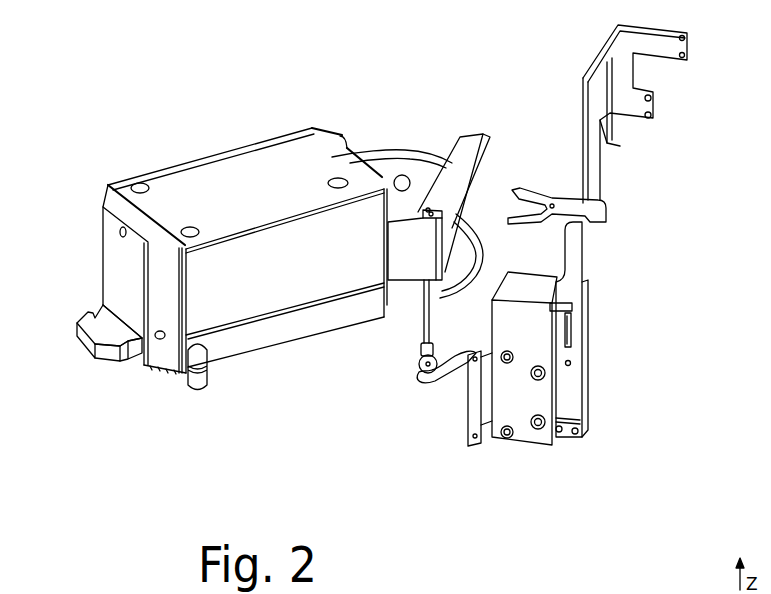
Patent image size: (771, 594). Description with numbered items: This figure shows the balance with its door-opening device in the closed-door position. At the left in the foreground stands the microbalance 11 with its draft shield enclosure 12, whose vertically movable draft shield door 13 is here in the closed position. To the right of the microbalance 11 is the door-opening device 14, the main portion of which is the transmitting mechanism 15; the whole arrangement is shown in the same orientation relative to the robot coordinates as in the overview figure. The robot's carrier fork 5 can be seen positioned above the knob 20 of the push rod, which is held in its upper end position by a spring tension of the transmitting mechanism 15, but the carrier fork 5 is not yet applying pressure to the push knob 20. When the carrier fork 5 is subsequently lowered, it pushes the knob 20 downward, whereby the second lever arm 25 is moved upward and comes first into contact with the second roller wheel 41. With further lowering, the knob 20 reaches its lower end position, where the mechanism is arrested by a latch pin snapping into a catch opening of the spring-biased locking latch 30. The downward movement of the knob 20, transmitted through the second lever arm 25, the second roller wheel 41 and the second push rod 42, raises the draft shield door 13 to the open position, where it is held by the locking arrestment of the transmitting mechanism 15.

The carrier fork 5 is at (565, 205).
The microbalance 11 is at (235, 170).
The draft shield enclosure 12 is at (418, 153).
The draft shield door 13 is at (482, 147).
The door-opening device 14 is at (396, 359).
The transmitting mechanism 15 is at (520, 432).
The knob of the push rod 20 is at (583, 228).
The second lever arm 25 is at (435, 387).
The spring-biased locking latch 30 is at (572, 287).
The second roller wheel 41 is at (422, 363).
The second push rod 42 is at (428, 312).